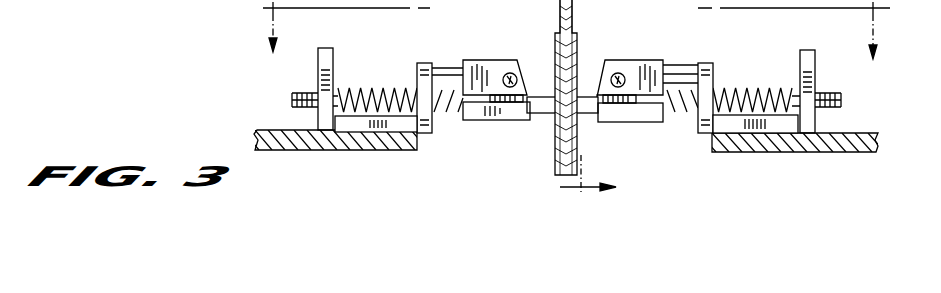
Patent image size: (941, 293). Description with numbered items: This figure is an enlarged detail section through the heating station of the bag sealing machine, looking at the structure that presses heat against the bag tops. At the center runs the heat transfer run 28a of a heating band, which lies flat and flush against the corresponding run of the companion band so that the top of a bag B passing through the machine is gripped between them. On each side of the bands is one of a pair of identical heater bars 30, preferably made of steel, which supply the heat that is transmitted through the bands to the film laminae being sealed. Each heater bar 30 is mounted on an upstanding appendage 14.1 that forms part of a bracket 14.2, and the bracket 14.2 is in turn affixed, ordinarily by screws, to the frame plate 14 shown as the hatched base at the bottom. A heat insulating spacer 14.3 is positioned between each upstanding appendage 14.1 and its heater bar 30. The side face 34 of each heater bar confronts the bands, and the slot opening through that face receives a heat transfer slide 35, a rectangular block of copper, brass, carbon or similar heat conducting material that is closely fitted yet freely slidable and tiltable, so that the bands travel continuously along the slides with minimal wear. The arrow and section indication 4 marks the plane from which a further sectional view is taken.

The frame plate 14 is at (833, 152).
The upstanding appendage 14.1 is at (430, 63).
The bracket 14.2 is at (842, 40).
The heat insulating spacer 14.3 is at (687, 72).
The heat transfer run 28a is at (513, 0).
The heater bar 30 is at (488, 62).
The side face 34 is at (537, 65).
The heat transfer slide 35 is at (595, 92).
The bag B is at (557, 160).
The section line 4- 4 is at (576, 102).